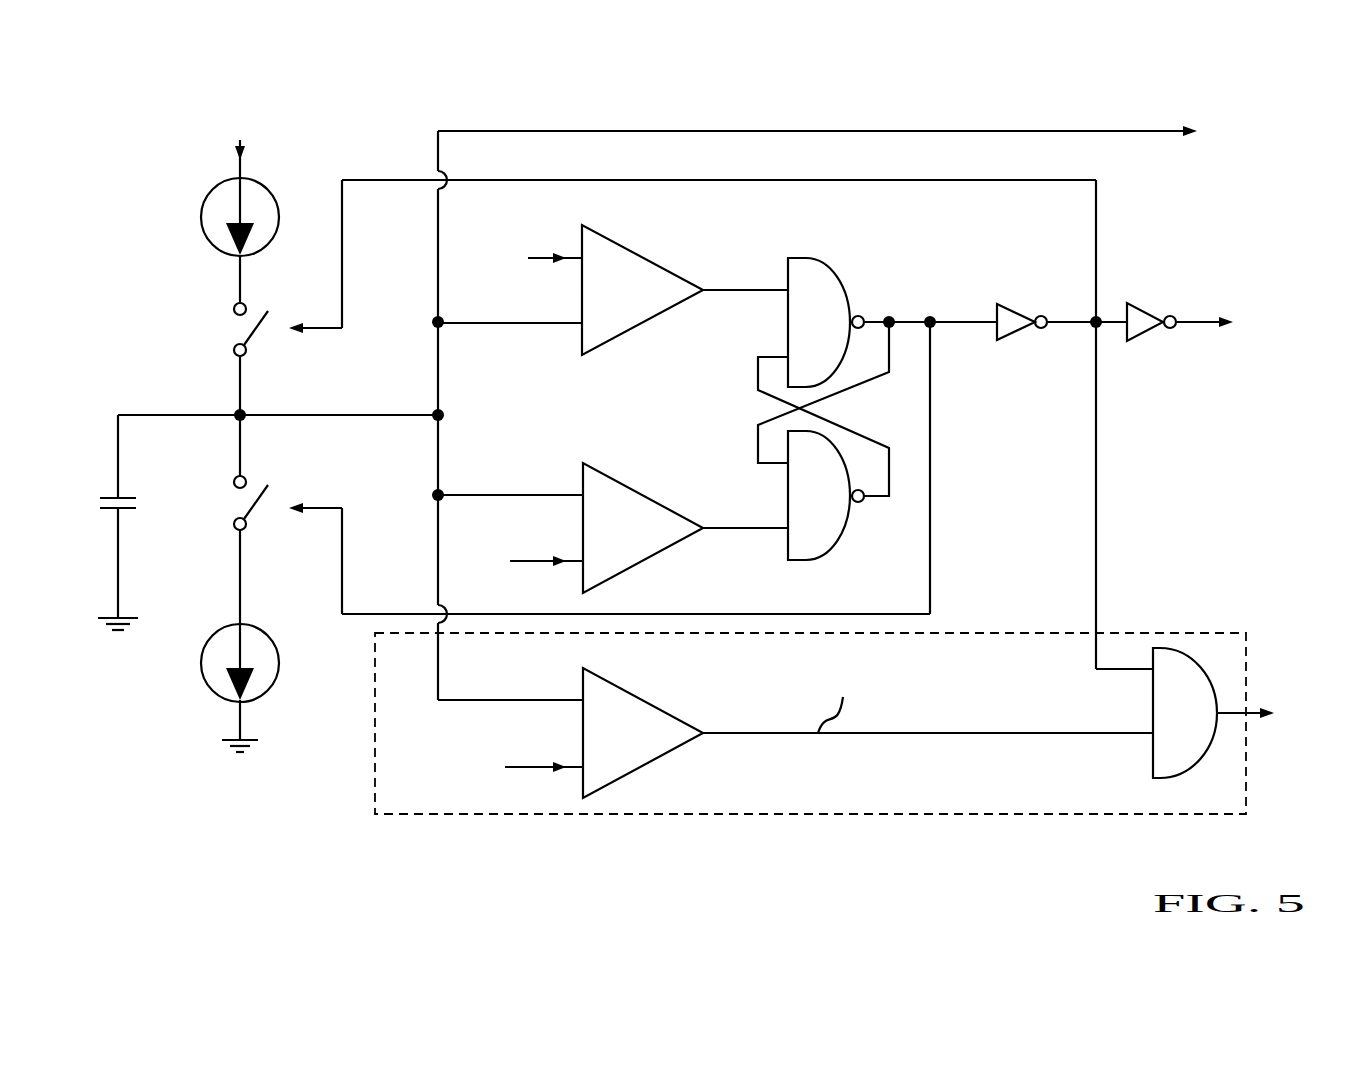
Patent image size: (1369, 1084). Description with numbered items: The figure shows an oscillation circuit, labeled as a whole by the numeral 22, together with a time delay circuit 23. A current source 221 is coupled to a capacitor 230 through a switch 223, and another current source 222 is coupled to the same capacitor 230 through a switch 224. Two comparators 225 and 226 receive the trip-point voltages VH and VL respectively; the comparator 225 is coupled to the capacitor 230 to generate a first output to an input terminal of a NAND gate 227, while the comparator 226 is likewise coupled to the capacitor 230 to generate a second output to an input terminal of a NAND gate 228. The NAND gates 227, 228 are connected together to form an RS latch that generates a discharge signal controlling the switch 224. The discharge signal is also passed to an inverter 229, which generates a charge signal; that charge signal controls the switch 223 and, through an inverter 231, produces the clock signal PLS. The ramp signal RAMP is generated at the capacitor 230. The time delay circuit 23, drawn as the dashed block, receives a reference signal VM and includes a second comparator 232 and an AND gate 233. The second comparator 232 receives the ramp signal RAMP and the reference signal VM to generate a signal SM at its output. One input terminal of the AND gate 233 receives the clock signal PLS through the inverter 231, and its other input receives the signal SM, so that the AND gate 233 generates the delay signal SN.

The ramp signal generator / pulse generator circuit 22 is at (1358, 210).
The current source 221 is at (213, 186).
The current source 222 is at (212, 645).
The switch 223 is at (223, 330).
The switch 224 is at (232, 506).
The comparator 225 is at (652, 260).
The comparator 226 is at (652, 499).
The NAND gate 227 is at (818, 265).
The NAND gate 228 is at (840, 538).
The inverter 229 is at (1023, 307).
The capacitor 230 is at (103, 493).
The inverter 231 is at (1133, 312).
The second comparator 232 is at (652, 703).
The AND gate 233 is at (1193, 660).
The time delay circuit 23 is at (880, 814).